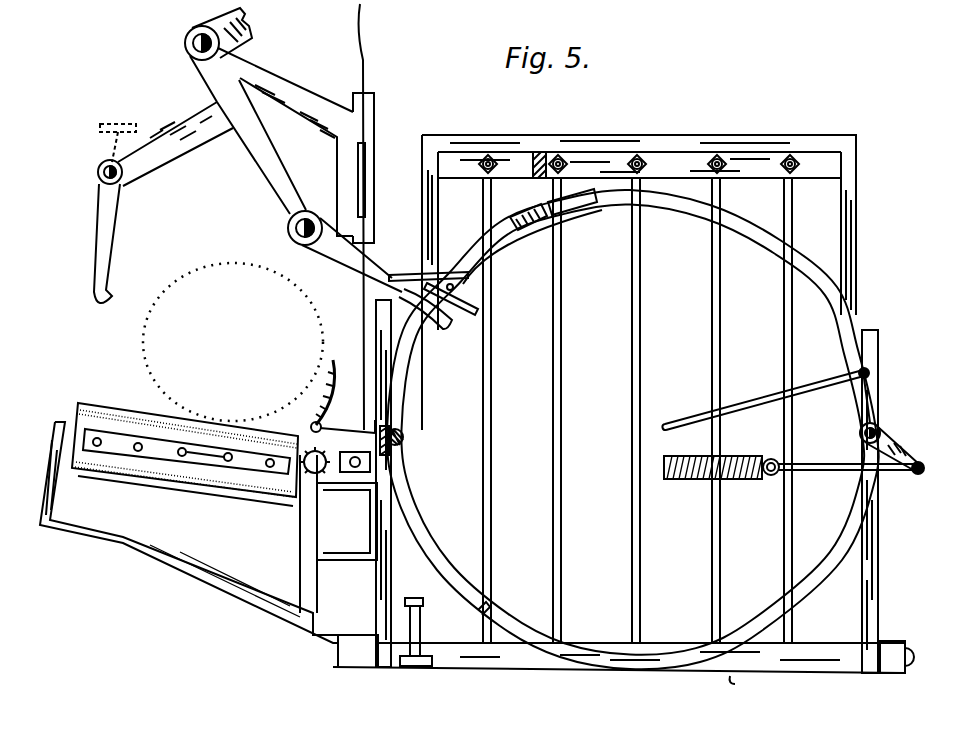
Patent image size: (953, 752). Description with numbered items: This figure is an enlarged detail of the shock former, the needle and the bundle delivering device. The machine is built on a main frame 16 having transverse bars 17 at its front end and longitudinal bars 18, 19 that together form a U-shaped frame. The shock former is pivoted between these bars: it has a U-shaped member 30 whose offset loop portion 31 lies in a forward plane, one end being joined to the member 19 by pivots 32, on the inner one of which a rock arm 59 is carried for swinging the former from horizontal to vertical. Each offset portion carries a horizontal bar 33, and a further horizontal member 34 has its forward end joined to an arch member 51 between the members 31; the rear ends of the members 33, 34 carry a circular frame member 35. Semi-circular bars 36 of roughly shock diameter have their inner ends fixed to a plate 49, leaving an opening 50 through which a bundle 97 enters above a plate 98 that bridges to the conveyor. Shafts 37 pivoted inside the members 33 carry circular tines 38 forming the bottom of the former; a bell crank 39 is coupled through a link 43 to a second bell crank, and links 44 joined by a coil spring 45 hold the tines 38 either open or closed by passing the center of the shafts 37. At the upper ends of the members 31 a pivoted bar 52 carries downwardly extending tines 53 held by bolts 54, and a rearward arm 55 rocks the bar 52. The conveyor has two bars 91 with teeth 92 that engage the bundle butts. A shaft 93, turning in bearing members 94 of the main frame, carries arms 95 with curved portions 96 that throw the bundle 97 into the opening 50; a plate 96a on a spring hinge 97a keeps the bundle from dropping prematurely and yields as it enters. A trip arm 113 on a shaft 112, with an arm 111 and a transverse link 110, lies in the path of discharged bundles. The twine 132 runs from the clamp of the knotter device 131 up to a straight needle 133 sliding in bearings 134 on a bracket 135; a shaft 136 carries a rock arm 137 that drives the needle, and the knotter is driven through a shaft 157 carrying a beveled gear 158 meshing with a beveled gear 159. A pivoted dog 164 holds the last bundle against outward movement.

The main frame 16 is at (545, 676).
The transversely arranged bars 17 is at (744, 685).
The longitudinally arranged bar 18 is at (893, 684).
The longitudinally arranged bar 19 is at (372, 676).
The U-shaped member 30 is at (391, 600).
The loop portion 31 is at (438, 222).
The pivots 32 is at (908, 654).
The horizontally arranged bar 33 is at (392, 428).
The horizontally arranged member 34 is at (527, 213).
The circular frame member 35 is at (860, 334).
The semi-circular bars 36 is at (512, 240).
The shafts 37 is at (882, 432).
The circular tines 38 is at (416, 510).
The bell crank 39 is at (878, 400).
The link 43 is at (760, 405).
The links 44 is at (808, 474).
The coil spring 45 is at (730, 480).
The plate 49 is at (408, 284).
The opening 50 is at (416, 357).
The arch member 51 is at (577, 208).
The pivotally mounted bar 52 is at (680, 153).
The tines 53 is at (482, 203).
The bolts 54 is at (497, 158).
The rearwardly extending arm 55 is at (548, 160).
The rock arm 59 is at (420, 630).
The bars 91 is at (183, 452).
The teeth 92 is at (205, 452).
The shaft 93 is at (298, 246).
The bearing members 94 is at (296, 172).
The arms 95 is at (342, 266).
The curved portions 96 is at (449, 332).
The plate 96a is at (338, 380).
The bundle 97 is at (233, 342).
The spring hinge 97a is at (325, 424).
The plate 98 is at (365, 425).
The link 110 is at (175, 142).
The arm 111 is at (108, 140).
The shaft 112 is at (124, 179).
The trip arm 113 is at (114, 249).
The knotter device 131 is at (370, 465).
The twine 132 is at (362, 320).
The needle 133 is at (366, 173).
The bearings 134 is at (374, 124).
The bracket 135 is at (285, 142).
The shaft 136 is at (188, 48).
The rock arm 137 is at (250, 40).
The shaft 157 is at (335, 454).
The beveled gear 158 is at (298, 507).
The beveled gear 159 is at (347, 521).
The pivoted dog 164 is at (478, 306).